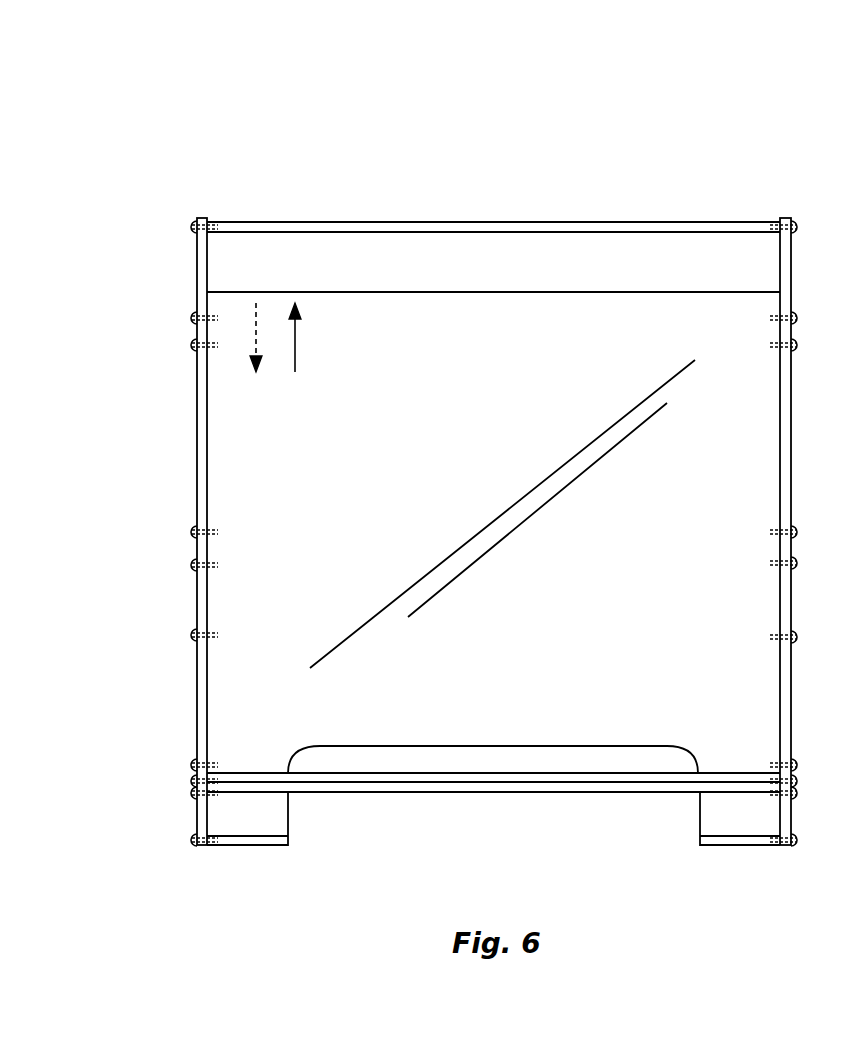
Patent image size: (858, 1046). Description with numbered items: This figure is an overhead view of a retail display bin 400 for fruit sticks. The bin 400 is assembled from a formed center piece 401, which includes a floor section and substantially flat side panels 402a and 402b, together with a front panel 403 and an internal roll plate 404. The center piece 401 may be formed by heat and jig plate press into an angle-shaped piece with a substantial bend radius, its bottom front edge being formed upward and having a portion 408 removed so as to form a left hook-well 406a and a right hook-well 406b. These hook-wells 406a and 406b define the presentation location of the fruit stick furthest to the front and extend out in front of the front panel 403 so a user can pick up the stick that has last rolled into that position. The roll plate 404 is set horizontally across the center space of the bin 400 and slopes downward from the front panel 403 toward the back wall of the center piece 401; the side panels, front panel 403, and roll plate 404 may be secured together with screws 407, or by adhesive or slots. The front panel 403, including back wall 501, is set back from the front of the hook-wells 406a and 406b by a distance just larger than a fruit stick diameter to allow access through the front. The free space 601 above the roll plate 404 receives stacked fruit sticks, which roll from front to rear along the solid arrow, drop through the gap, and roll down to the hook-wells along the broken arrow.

The retail display bin 400 is at (473, 138).
The formed center piece 401 is at (572, 222).
The side panel 402a is at (196, 431).
The side panel 402b is at (791, 443).
The front panel 403 is at (428, 793).
The internal roll plate 404 is at (410, 290).
The left hook-well 406a is at (254, 845).
The right hook-well 406b is at (748, 845).
The screws 407 is at (190, 635).
The removed portion 408 is at (573, 746).
The back wall 501 is at (490, 773).
The free space 601 is at (508, 358).